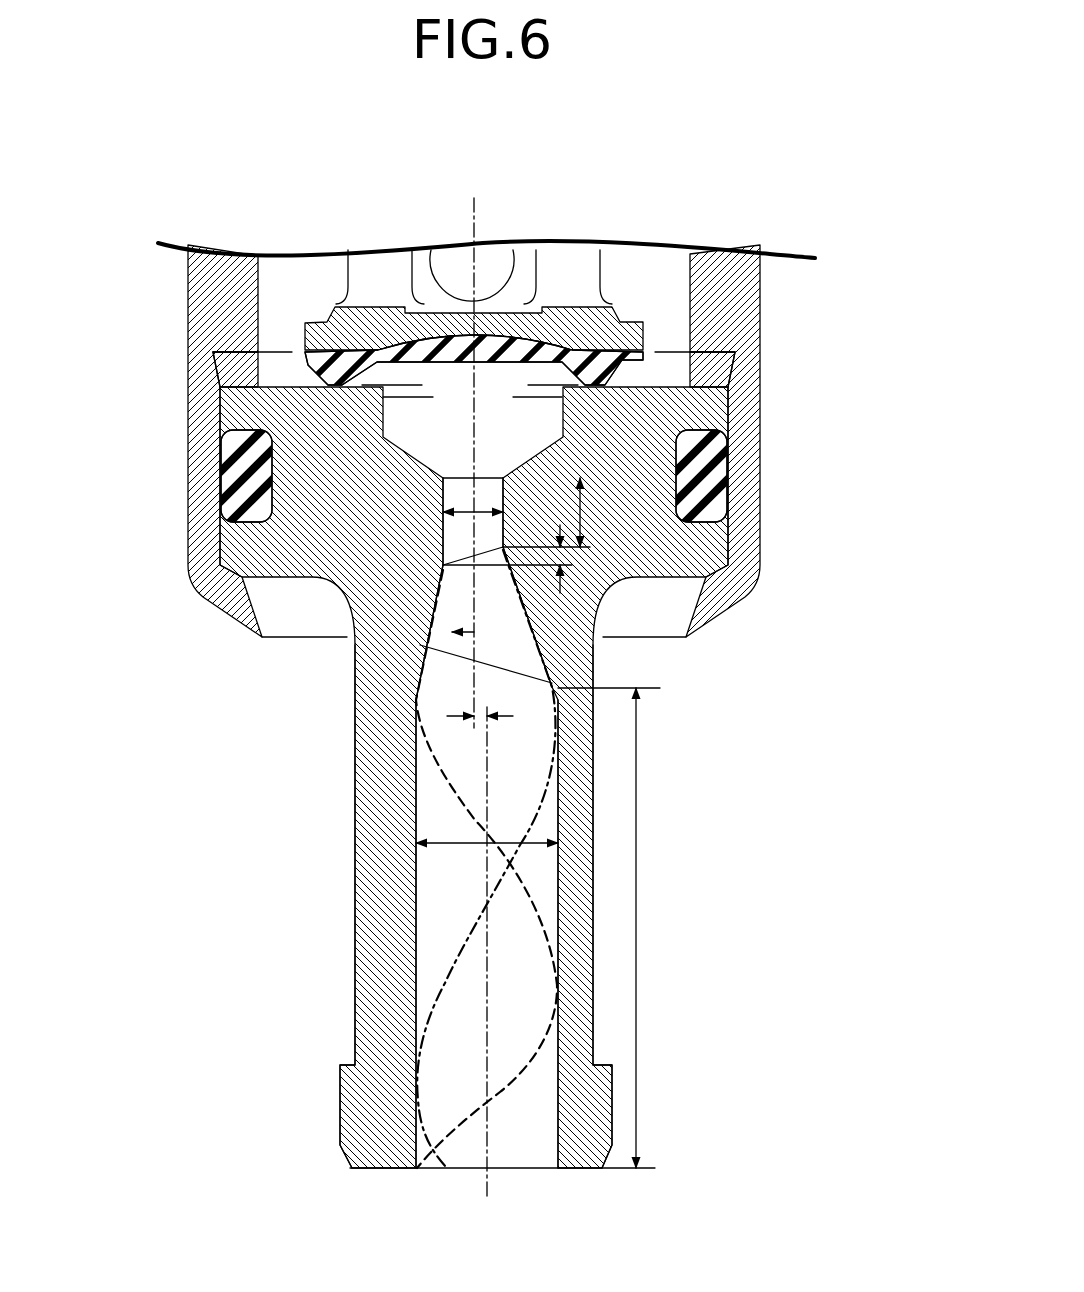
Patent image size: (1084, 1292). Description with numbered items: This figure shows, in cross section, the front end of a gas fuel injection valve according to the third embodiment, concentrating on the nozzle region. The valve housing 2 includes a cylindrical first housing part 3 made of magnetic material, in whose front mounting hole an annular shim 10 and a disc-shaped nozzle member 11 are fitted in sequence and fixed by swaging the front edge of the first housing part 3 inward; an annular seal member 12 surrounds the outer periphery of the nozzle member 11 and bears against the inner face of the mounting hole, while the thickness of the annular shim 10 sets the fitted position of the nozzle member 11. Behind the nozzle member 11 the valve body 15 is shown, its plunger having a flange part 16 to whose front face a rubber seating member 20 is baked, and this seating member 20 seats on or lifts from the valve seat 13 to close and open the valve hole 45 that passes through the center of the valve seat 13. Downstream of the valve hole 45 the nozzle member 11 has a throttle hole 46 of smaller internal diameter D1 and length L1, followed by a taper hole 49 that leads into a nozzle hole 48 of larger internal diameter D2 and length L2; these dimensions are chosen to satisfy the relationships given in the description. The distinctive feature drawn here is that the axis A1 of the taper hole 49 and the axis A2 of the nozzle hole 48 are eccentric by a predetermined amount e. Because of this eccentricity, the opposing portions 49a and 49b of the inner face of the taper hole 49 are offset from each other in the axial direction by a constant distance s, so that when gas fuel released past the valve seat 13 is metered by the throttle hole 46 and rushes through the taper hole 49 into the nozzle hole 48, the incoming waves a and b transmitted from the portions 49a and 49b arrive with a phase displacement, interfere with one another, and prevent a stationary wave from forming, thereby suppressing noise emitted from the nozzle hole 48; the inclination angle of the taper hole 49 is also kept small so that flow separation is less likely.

The valve housing 2 is at (725, 248).
The first housing part 3 is at (737, 297).
The annular shim 10 is at (722, 372).
The nozzle member 11 is at (340, 818).
The annular seal member 12 is at (708, 470).
The valve seat 13 is at (660, 388).
The valve body 15 is at (559, 274).
The flange part 16 is at (625, 335).
The seating member 20 is at (647, 367).
The valve hole 45 is at (392, 400).
The throttle hole 46 is at (446, 523).
The nozzle hole 48 is at (424, 922).
The taper hole 49 is at (483, 575).
The opposing portion of taper hole inner face 49a is at (408, 617).
The opposing portion of taper hole inner face 49b is at (522, 610).
The axis of taper hole A1 is at (476, 222).
The axis of nozzle hole A2 is at (492, 1130).
The incoming wave a is at (445, 982).
The incoming wave b is at (533, 1045).
The internal diameter of throttle hole D1 is at (467, 508).
The internal diameter of nozzle hole D2 is at (457, 848).
The length of throttle hole L1 is at (582, 510).
The length of nozzle hole L2 is at (636, 920).
The constant distance s is at (568, 562).
The predetermined amount of eccentricity e is at (492, 713).